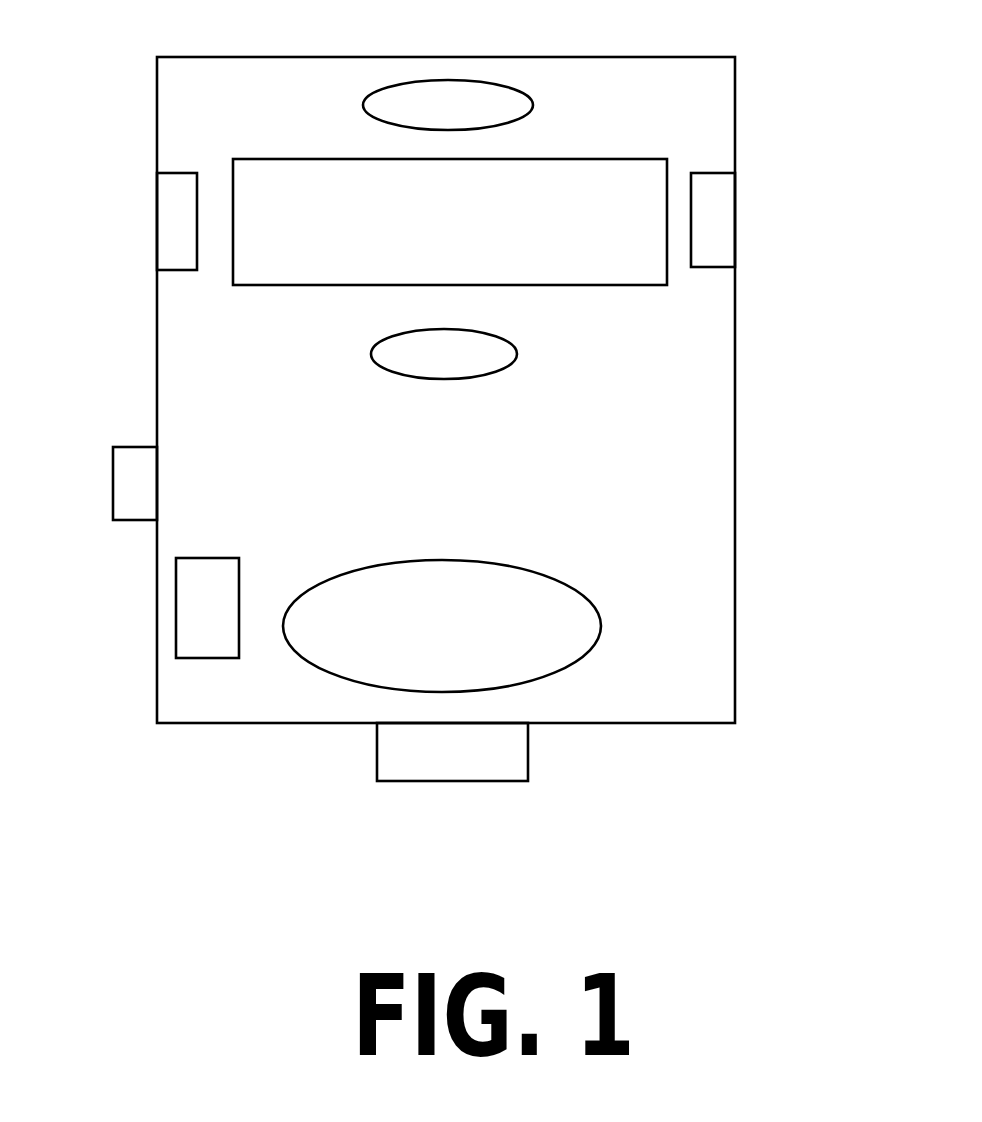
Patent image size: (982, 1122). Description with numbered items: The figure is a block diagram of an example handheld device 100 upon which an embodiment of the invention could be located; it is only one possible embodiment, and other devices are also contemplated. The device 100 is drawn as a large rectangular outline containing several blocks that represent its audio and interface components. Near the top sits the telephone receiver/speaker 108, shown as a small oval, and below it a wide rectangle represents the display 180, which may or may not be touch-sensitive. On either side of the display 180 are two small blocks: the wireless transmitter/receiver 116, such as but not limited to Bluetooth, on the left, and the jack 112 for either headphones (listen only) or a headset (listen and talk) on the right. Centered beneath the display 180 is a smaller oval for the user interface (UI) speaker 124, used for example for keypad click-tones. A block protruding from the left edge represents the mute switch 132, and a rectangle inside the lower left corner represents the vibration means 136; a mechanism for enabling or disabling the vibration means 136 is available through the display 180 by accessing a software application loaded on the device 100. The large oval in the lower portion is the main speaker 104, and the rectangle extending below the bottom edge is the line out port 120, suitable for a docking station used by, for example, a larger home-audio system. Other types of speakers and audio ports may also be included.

The handheld device 100 is at (733, 768).
The main speaker 104 is at (398, 622).
The telephone receiver/speaker 108 is at (438, 108).
The jack 112 is at (713, 232).
The wireless transmitter/receiver 116 is at (175, 226).
The line out port 120 is at (488, 751).
The user interface (UI) speaker 124 is at (424, 353).
The mute switch 132 is at (122, 482).
The vibration means 136 is at (203, 627).
The display 180 is at (607, 258).